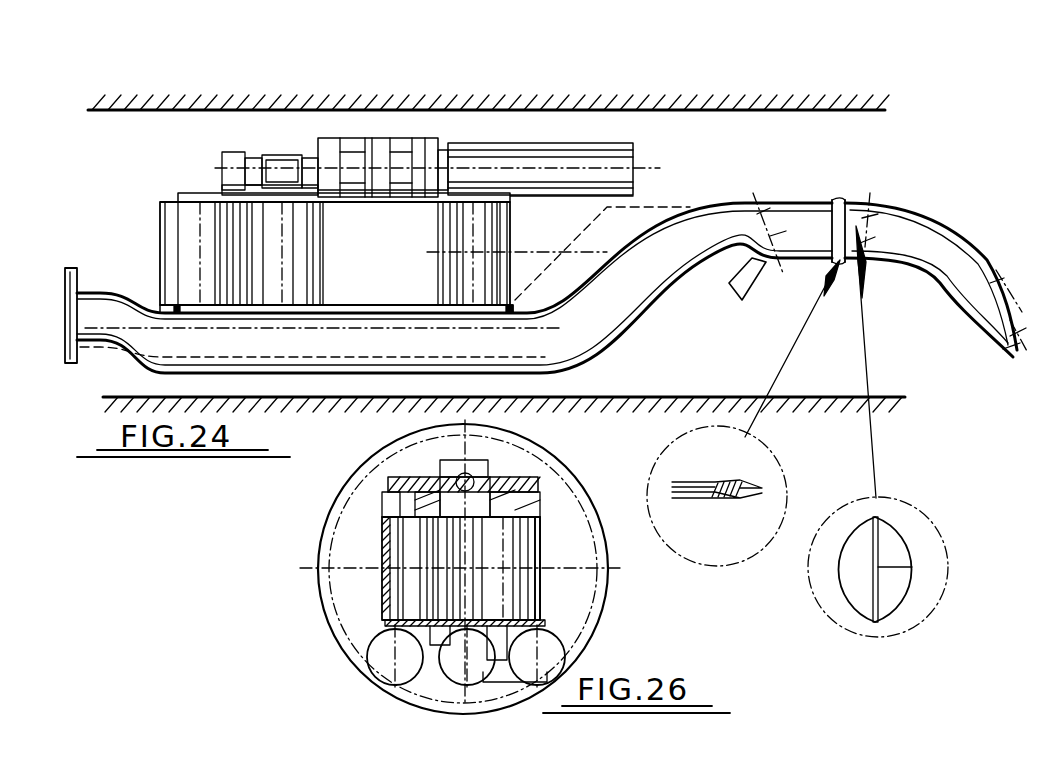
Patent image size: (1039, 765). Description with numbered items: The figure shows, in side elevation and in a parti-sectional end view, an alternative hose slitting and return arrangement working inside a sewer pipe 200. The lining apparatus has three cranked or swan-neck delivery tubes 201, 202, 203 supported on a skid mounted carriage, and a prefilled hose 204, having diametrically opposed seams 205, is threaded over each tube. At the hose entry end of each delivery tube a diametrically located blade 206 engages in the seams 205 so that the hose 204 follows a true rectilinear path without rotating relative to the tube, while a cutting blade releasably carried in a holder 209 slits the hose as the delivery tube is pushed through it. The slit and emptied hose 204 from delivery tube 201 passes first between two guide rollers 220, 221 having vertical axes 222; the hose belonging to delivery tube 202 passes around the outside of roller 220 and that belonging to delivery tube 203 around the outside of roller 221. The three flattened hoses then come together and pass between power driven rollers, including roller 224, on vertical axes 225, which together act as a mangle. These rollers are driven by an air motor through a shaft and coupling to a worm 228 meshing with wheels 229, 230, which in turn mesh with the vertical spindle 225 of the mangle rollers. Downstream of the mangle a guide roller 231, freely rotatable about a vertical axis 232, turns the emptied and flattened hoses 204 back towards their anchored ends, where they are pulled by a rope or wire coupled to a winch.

In FIG. 24, the sewer pipe 200 is at (623, 112).
In FIG. 24, the delivery tube 201 is at (642, 298).
In FIG. 26, the delivery tube 201 is at (452, 677).
In FIG. 26, the delivery tube 202 is at (537, 692).
In FIG. 26, the delivery tube 203 is at (370, 668).
In FIG. 24, the prefilled hose 204 is at (923, 215).
In FIG. 24, the seams 205 is at (878, 622).
In FIG. 24, the blade 206 is at (878, 567).
In FIG. 24, the holder 209 is at (747, 277).
In FIG. 26, the guide roller 220 is at (505, 543).
In FIG. 24, the guide roller 221 is at (457, 273).
In FIG. 24, the vertical axes 222 is at (473, 233).
In FIG. 26, the vertical axes 222 is at (540, 557).
In FIG. 24, the power driven roller 224 is at (310, 255).
In FIG. 24, the vertical axis 225 is at (283, 218).
In FIG. 24, the worm 228 is at (280, 170).
In FIG. 26, the worm 228 is at (455, 478).
In FIG. 26, the wheel 229 is at (505, 482).
In FIG. 26, the wheel 230 is at (387, 483).
In FIG. 24, the guide roller 231 is at (175, 212).
In FIG. 24, the vertical axis 232 is at (200, 245).